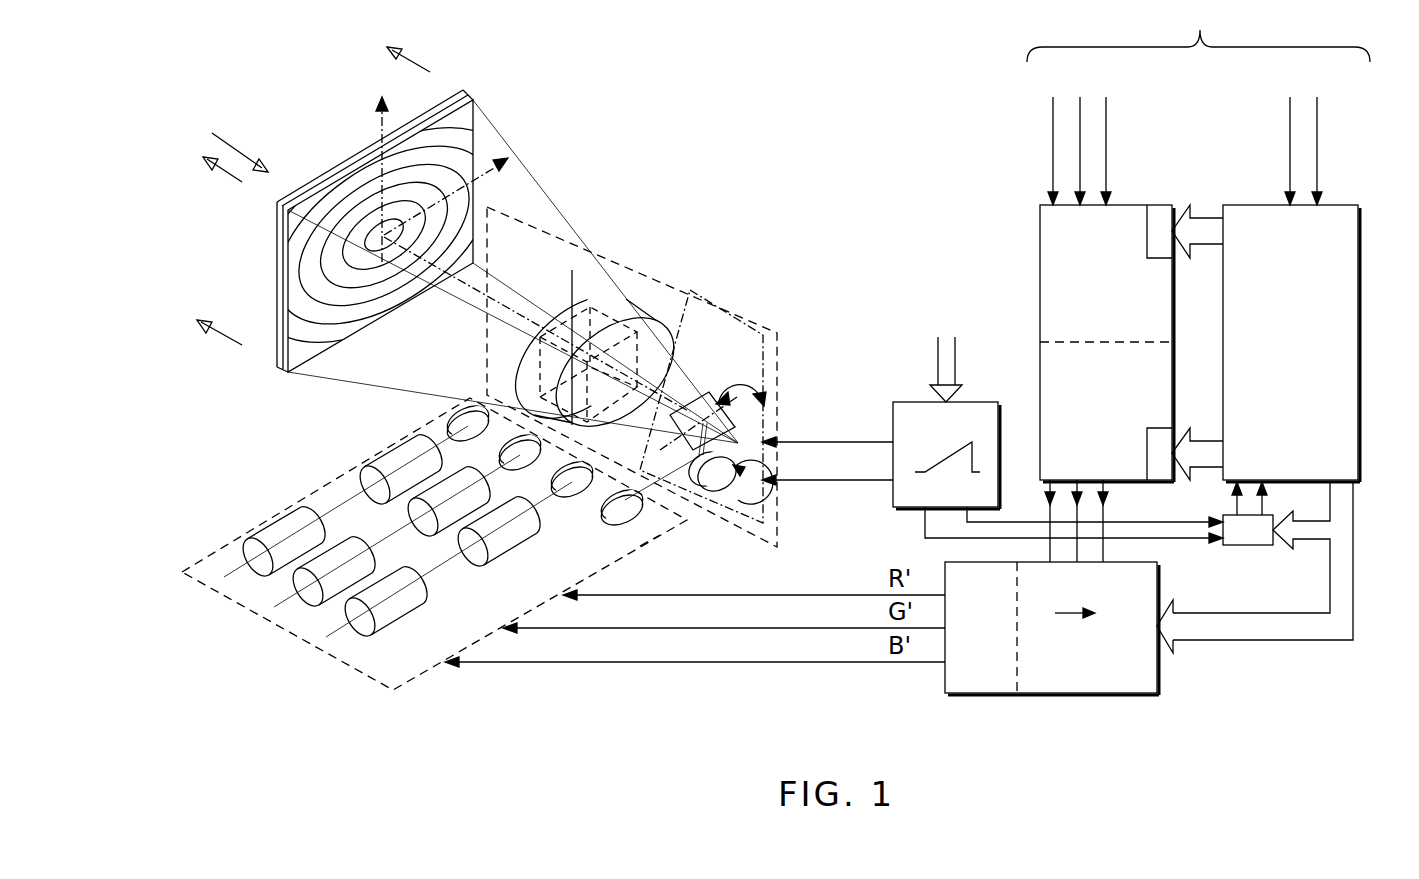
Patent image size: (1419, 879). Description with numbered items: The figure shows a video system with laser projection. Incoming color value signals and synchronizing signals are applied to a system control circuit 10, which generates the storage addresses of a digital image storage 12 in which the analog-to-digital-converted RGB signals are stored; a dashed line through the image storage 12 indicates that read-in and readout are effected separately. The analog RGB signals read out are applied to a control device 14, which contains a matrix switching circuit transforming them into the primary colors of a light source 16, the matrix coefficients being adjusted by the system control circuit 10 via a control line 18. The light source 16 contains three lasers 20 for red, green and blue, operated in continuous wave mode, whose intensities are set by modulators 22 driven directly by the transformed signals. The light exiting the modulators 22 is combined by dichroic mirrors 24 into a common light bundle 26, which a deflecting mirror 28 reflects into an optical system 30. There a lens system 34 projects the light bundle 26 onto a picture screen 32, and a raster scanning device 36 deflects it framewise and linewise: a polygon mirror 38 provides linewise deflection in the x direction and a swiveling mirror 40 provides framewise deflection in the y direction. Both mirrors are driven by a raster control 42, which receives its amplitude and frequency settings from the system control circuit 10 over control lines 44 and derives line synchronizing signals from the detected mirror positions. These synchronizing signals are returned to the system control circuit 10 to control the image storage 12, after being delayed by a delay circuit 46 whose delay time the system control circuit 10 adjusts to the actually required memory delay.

The system control circuit 10 is at (1340, 215).
The image storage 12 is at (1122, 212).
The control device 14 is at (1160, 688).
The light source 16 is at (413, 682).
The control line 18 is at (1250, 637).
The lasers 20 is at (262, 570).
The modulators 22 is at (390, 462).
The dichroic mirrors 24 is at (476, 440).
The light bundle 26 is at (628, 525).
The deflecting mirror 28 is at (655, 538).
The optical system 30 is at (747, 330).
The picture screen 32 is at (476, 100).
The lens system 34 is at (622, 300).
The raster scanning device 36 is at (690, 290).
The polygon mirror 38 is at (720, 497).
The swiveling mirror 40 is at (705, 388).
The raster control 42 is at (978, 408).
The control lines 44 is at (940, 357).
The delay circuit 46 is at (1253, 548).